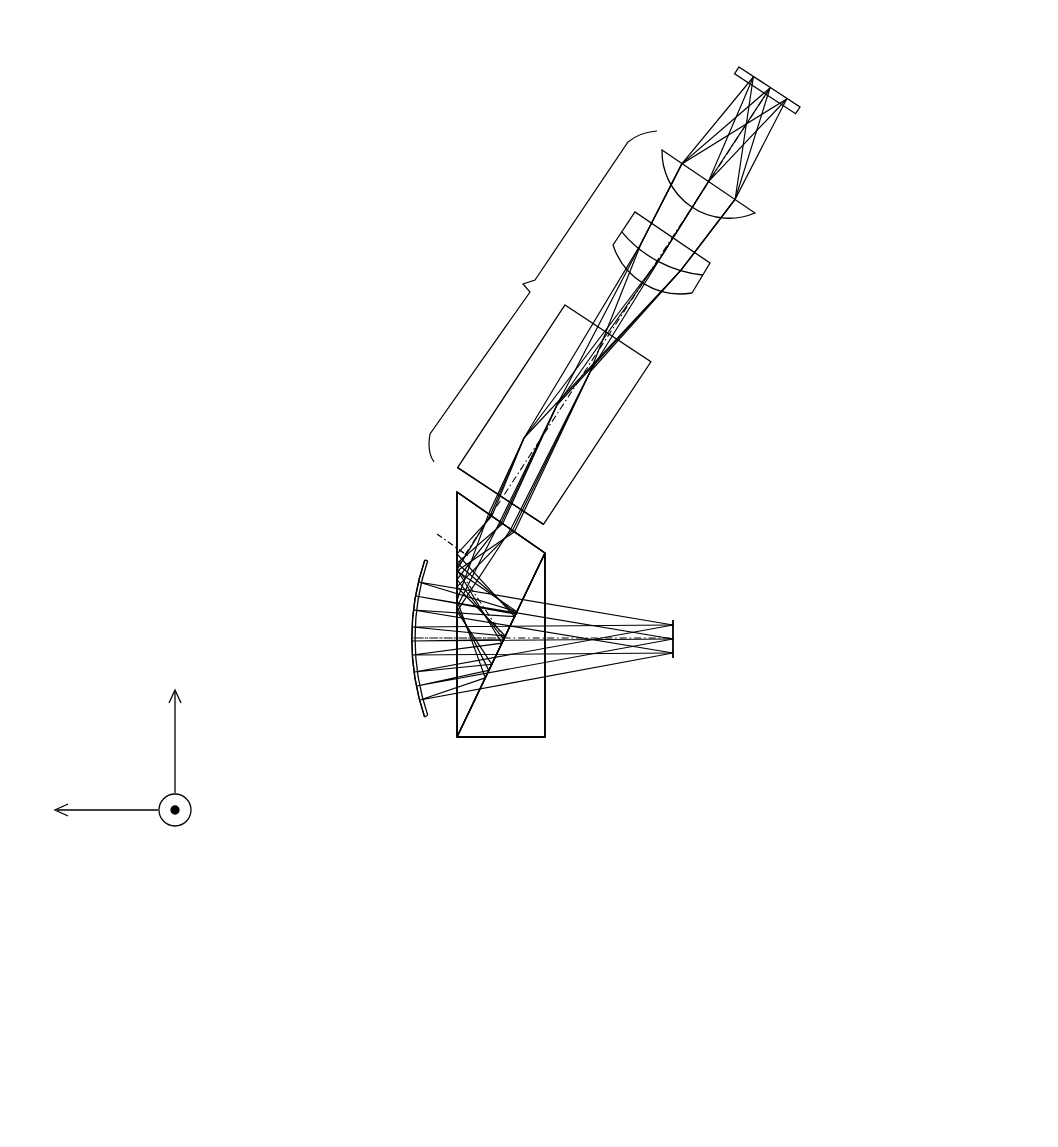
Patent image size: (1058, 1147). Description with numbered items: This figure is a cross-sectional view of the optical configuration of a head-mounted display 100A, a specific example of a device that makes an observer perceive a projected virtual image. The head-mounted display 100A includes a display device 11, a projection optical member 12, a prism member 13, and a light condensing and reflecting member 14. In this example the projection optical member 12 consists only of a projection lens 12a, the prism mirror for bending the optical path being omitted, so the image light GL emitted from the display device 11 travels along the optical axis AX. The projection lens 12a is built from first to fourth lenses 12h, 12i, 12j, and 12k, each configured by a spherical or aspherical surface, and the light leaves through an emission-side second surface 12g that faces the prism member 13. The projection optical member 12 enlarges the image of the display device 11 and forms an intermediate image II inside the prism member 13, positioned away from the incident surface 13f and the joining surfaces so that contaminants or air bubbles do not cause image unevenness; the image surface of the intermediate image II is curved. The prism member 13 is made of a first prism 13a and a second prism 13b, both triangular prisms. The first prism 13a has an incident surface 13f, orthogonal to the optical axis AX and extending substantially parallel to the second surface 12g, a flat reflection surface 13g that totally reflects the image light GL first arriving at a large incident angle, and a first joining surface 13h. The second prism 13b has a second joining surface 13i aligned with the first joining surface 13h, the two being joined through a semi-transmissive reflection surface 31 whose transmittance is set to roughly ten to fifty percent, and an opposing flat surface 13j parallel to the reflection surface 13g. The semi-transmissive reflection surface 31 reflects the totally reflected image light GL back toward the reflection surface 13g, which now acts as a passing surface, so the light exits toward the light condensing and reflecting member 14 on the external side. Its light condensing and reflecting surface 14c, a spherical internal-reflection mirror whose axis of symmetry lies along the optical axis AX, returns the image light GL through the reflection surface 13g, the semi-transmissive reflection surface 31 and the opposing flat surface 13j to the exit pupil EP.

The head-mounted display 100A is at (405, 118).
The display device 11 is at (797, 113).
The projection optical member 12 is at (657, 131).
The projection lens 12a is at (539, 296).
The first lens 12h is at (748, 215).
The second lens 12i is at (703, 278).
The third lens 12j is at (677, 296).
The fourth lens 12k is at (593, 437).
The second surface 12g is at (523, 513).
The prism member 13 is at (468, 556).
The first prism 13a is at (466, 518).
The incident surface 13f is at (533, 540).
The opposing flat surface 13j is at (550, 592).
The reflection surface 13g is at (450, 716).
The second prism 13b is at (498, 718).
The semi-transmissive reflection surface 31 is at (490, 690).
The first joining surface 13h is at (572, 688).
The second joining surface 13i is at (600, 688).
The light condensing and reflecting surface 14c is at (412, 637).
The light condensing and reflecting member 14 is at (348, 638).
The image light GL is at (637, 336).
The optical axis AX is at (593, 632).
The exit pupil EP is at (673, 660).
The intermediate image II is at (455, 570).